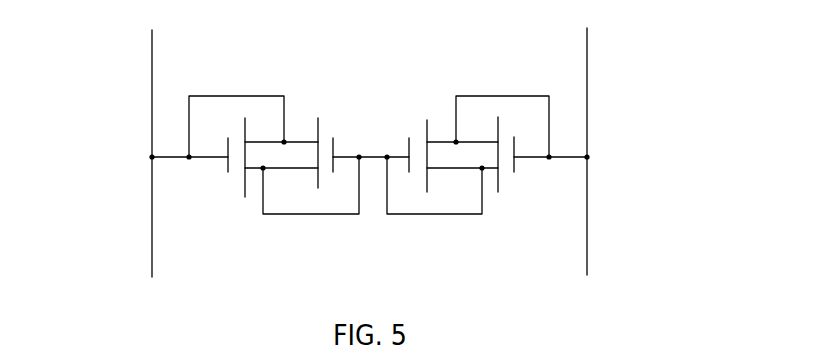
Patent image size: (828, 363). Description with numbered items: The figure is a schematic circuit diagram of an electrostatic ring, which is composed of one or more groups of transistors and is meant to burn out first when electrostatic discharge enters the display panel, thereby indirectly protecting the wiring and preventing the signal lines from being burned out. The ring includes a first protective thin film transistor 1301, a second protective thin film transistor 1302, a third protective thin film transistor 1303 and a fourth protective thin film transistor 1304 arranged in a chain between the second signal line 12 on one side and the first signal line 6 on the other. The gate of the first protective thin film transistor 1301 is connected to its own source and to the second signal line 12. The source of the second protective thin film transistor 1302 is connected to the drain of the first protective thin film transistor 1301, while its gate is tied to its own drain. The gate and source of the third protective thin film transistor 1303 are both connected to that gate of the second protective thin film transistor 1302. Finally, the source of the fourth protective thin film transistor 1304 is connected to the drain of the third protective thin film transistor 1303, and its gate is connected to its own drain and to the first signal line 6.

The second signal line 12 is at (152, 108).
The first signal line 6 is at (587, 98).
The first protective thin film transistor 1301 is at (237, 160).
The second protective thin film transistor 1302 is at (328, 143).
The third protective thin film transistor 1303 is at (408, 143).
The fourth protective thin film transistor 1304 is at (506, 163).